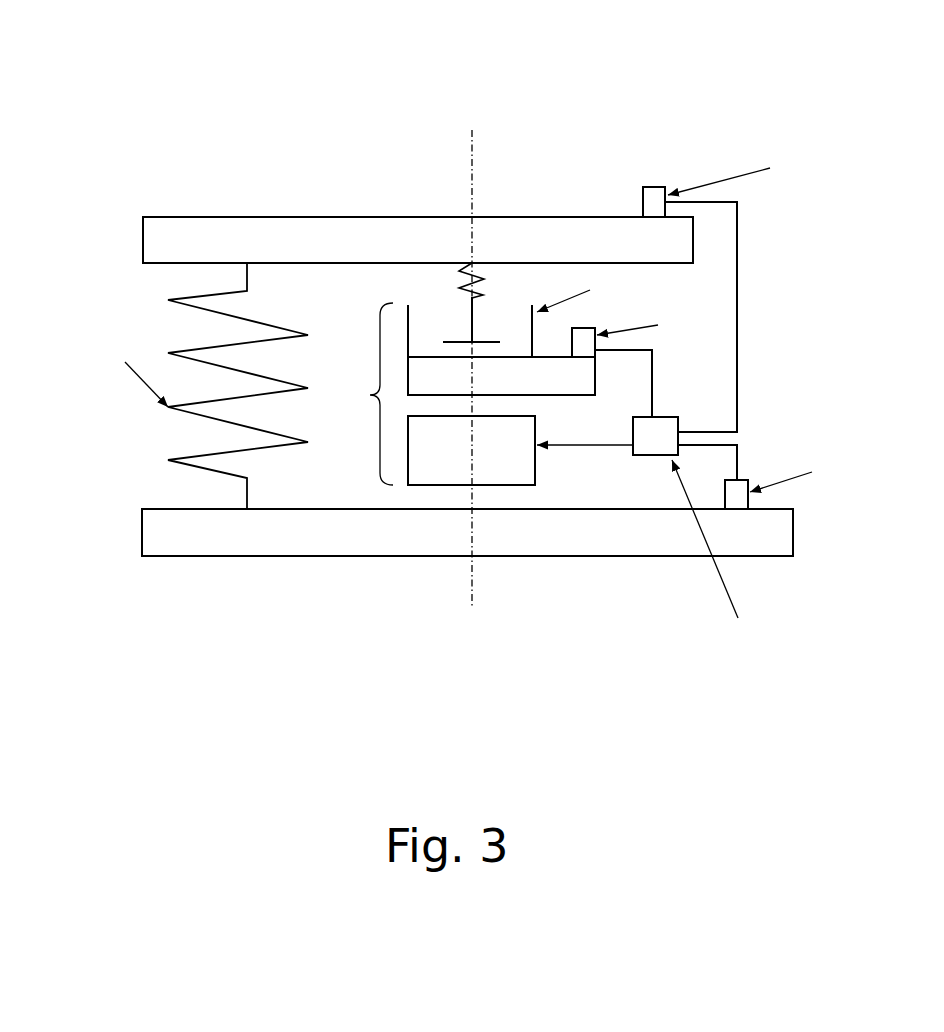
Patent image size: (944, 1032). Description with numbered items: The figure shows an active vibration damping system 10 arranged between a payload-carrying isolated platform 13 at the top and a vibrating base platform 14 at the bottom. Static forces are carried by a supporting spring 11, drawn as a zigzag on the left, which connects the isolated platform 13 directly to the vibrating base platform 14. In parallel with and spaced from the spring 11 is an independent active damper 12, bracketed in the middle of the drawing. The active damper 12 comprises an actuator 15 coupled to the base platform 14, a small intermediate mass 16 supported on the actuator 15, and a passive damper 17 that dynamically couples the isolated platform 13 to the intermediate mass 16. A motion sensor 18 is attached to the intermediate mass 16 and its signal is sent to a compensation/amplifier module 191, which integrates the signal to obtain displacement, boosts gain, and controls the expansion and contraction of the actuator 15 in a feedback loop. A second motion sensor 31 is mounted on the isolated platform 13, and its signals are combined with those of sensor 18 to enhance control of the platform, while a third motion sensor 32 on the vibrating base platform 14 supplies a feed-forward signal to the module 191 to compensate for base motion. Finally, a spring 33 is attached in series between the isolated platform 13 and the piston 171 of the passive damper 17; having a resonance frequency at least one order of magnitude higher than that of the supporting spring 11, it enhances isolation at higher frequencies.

The active vibration damping system 10 is at (578, 125).
The supporting spring 11 is at (168, 300).
The active damper 12 is at (449, 385).
The isolated platform 13 is at (152, 217).
The vibrating base platform 14 is at (142, 533).
The actuator 15 is at (537, 475).
The intermediate mass 16 is at (595, 395).
The passive damper 17 is at (408, 304).
The piston 171 is at (478, 320).
The motion sensor 18 is at (597, 331).
The second motion sensor 31 is at (665, 188).
The third motion sensor 32 is at (745, 481).
The spring 33 is at (488, 273).
The compensation/amplifier module 191 is at (678, 457).